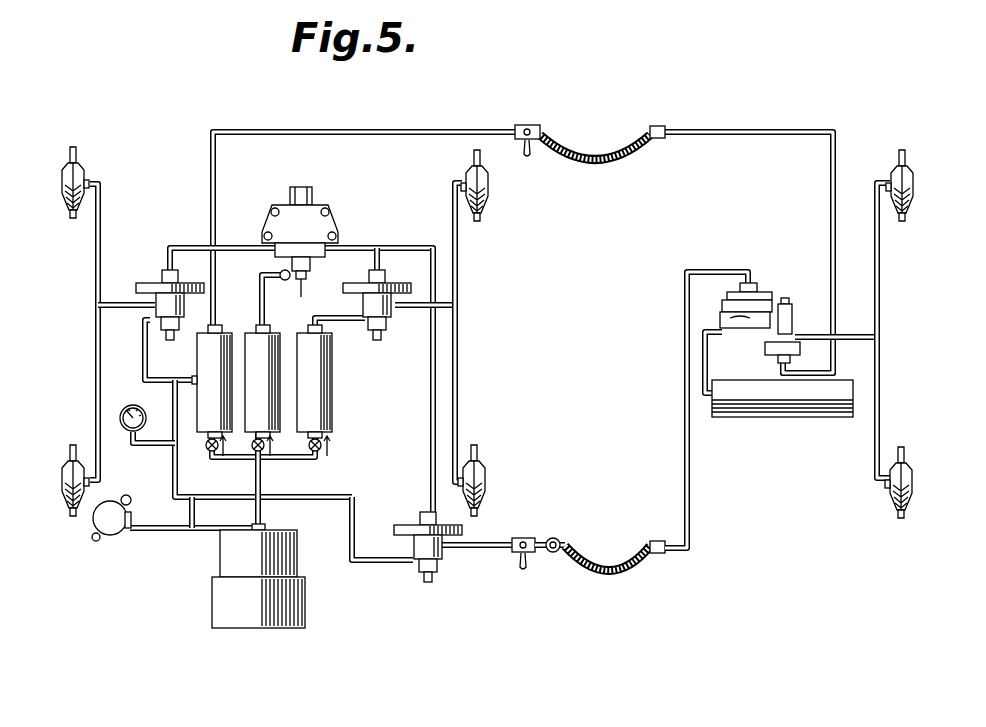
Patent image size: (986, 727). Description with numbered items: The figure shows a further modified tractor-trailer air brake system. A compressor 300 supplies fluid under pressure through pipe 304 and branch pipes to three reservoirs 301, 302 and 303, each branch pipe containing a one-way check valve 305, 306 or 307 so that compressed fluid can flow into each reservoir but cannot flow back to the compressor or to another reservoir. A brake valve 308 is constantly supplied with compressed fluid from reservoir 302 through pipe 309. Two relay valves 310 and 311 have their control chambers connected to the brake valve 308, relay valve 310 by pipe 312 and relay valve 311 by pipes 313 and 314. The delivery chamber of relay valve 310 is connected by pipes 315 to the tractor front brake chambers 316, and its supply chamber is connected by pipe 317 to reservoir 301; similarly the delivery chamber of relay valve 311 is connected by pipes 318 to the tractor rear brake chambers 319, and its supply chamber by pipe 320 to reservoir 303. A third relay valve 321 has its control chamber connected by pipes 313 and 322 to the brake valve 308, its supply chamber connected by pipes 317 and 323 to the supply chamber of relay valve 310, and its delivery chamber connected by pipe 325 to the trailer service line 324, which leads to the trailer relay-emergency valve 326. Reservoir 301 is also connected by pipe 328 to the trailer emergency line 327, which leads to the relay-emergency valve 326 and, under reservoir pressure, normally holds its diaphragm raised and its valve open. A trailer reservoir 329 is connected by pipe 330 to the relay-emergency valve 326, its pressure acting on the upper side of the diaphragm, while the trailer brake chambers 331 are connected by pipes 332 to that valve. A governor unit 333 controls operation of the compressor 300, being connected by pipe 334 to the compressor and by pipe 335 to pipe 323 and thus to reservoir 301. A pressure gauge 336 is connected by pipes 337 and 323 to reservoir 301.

The compressor 300 is at (300, 603).
The reservoir 301 is at (208, 373).
The reservoir 302 is at (252, 343).
The reservoir 303 is at (312, 375).
The pipe 304 is at (262, 480).
The one-way check valve 305 is at (210, 452).
The one-way check valve 306 is at (256, 452).
The one-way check valve 307 is at (330, 457).
The brake valve 308 is at (305, 222).
The pipe 309 is at (266, 300).
The relay valve 310 is at (156, 284).
The relay valve 311 is at (392, 285).
The pipe 312 is at (229, 247).
The pipe 313 is at (353, 248).
The pipe 314 is at (373, 262).
The pipes 315 is at (118, 309).
The tractor front brake chambers 316 is at (60, 190).
The pipe 317 is at (146, 352).
The pipes 318 is at (440, 300).
The tractor rear brake chambers 319 is at (490, 186).
The pipe 320 is at (340, 323).
The third relay valve 321 is at (426, 527).
The pipe 322 is at (428, 398).
The pipe 323 is at (352, 497).
The trailer service line 324 is at (690, 500).
The pipe 325 is at (481, 550).
The trailer relay-emergency valve 326 is at (755, 297).
The trailer emergency line 327 is at (830, 233).
The pipe 328 is at (253, 133).
The trailer reservoir 329 is at (795, 405).
The pipe 330 is at (708, 352).
The trailer brake chambers 331 is at (915, 185).
The pipes 332 is at (858, 337).
The governor unit 333 is at (100, 528).
The pipe 334 is at (160, 525).
The pipe 335 is at (198, 497).
The pressure gauge 336 is at (146, 404).
The pipe 337 is at (153, 446).